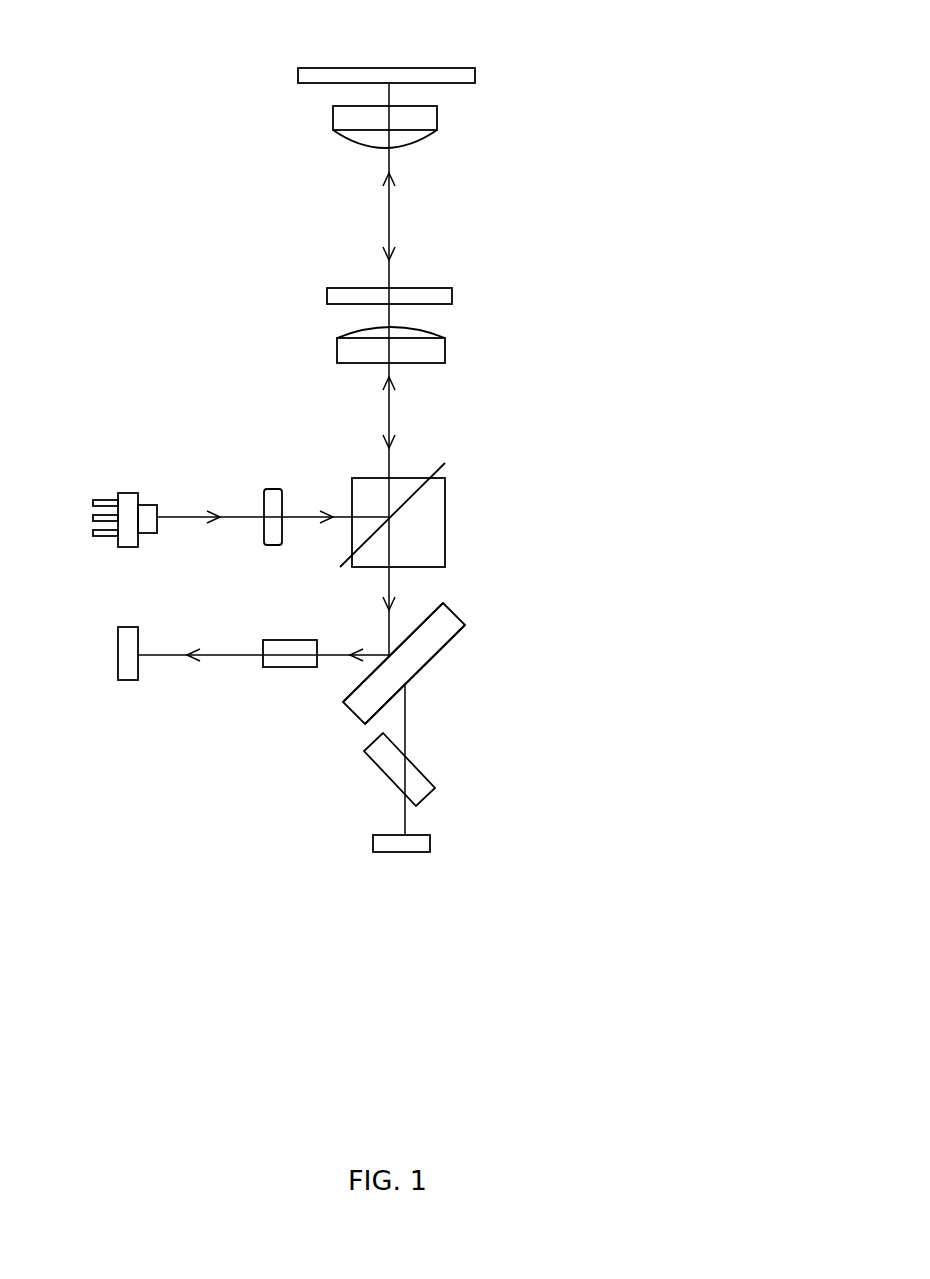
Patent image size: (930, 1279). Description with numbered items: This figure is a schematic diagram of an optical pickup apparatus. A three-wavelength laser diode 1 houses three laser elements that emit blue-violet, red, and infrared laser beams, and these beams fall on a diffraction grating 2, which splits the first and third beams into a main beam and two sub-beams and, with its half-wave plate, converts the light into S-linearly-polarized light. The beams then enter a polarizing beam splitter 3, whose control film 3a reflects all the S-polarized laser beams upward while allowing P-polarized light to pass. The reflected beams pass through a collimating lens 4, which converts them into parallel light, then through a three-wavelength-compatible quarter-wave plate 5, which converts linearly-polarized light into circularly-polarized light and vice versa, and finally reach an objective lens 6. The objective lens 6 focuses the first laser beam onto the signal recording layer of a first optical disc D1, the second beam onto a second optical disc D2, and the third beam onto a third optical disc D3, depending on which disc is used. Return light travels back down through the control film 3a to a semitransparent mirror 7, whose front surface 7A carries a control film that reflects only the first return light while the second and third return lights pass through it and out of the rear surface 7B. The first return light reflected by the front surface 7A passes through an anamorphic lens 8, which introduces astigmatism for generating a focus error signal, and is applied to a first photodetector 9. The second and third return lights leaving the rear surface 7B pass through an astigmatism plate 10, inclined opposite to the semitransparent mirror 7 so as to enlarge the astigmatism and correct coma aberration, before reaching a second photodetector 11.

The three-wavelength laser diode 1 is at (126, 493).
The diffraction grating 2 is at (270, 496).
The polarizing beam splitter 3 is at (437, 533).
The control film 3a is at (413, 498).
The collimating lens 4 is at (445, 352).
The quarter-wave plate 5 is at (452, 296).
The objective lens 6 is at (437, 118).
The first optical disc D1 is at (463, 47).
The second optical disc D2 is at (463, 47).
The third optical disc D3 is at (452, 77).
The semitransparent mirror 7 is at (440, 630).
The front surface 7A is at (420, 623).
The rear surface 7B is at (422, 667).
The anamorphic lens 8 is at (275, 665).
The first photodetector 9 is at (132, 678).
The astigmatism plate 10 is at (423, 787).
The second photodetector 11 is at (422, 845).